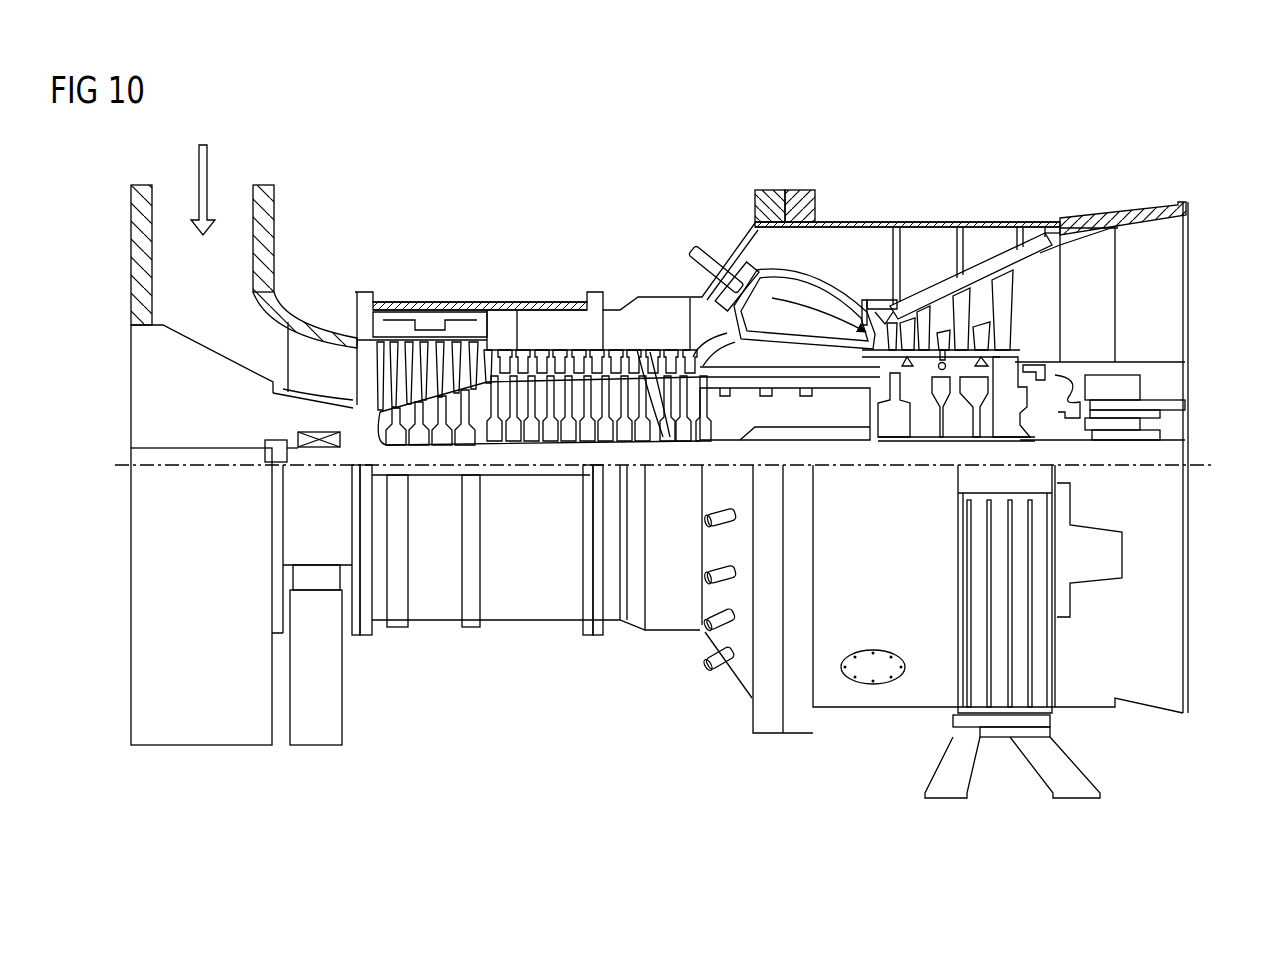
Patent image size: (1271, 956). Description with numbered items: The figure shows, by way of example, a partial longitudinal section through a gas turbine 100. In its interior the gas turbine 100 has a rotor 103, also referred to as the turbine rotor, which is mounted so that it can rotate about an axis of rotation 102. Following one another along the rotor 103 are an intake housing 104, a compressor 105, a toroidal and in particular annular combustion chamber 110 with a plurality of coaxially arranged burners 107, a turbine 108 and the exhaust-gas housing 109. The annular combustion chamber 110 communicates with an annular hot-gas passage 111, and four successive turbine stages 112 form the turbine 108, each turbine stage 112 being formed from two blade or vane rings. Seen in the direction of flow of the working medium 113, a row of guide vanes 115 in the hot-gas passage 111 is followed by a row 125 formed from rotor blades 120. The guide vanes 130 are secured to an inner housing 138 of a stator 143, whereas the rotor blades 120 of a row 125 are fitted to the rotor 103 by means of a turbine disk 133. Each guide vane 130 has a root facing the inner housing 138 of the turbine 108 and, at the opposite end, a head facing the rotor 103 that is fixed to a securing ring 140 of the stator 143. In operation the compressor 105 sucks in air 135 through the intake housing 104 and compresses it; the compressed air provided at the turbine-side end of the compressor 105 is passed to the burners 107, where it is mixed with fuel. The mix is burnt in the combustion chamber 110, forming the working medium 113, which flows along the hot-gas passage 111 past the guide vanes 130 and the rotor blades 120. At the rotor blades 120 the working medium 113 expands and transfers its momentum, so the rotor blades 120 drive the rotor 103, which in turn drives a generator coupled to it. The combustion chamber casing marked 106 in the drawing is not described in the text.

The gas turbine 100 is at (520, 194).
The axis of rotation 102 is at (128, 465).
The rotor 103 is at (722, 432).
The intake housing 104 is at (262, 246).
The compressor 105 is at (450, 285).
The combustion chamber casing 106 is at (848, 320).
The burners 107 is at (690, 240).
The turbine 108 is at (900, 192).
The exhaust-gas housing 109 is at (1097, 223).
The combustion chamber 110 is at (780, 287).
The hot-gas passage 111 is at (1028, 297).
The turbine stage 112 is at (1012, 190).
The working medium 113 is at (793, 323).
The row of guide vanes 115 is at (978, 245).
The rotor blades 120 is at (945, 352).
The row of rotor blades 125 is at (1033, 231).
The guide vanes 130 is at (920, 318).
The turbine disk 133 is at (1003, 423).
The air 135 is at (208, 178).
The inner housing 138 is at (923, 261).
The securing ring 140 is at (884, 326).
The stator 143 is at (868, 220).